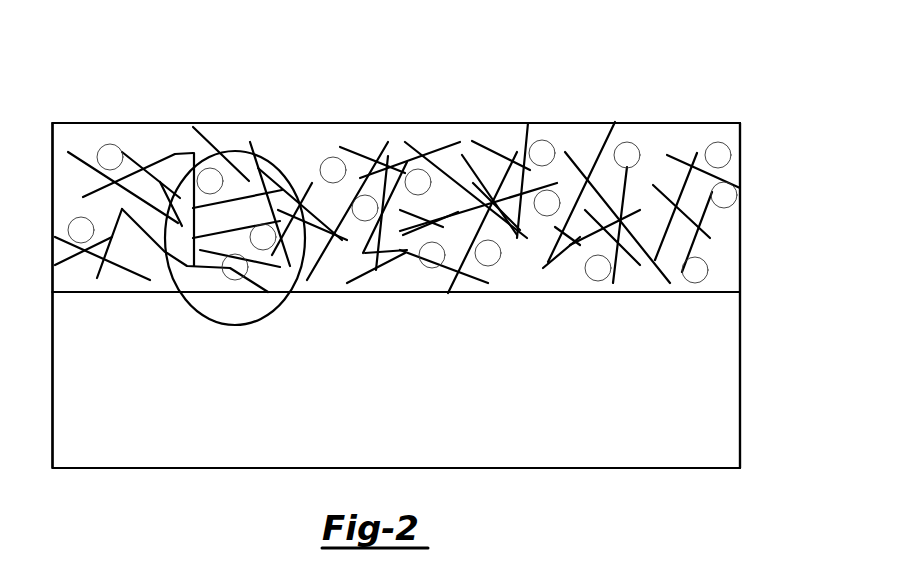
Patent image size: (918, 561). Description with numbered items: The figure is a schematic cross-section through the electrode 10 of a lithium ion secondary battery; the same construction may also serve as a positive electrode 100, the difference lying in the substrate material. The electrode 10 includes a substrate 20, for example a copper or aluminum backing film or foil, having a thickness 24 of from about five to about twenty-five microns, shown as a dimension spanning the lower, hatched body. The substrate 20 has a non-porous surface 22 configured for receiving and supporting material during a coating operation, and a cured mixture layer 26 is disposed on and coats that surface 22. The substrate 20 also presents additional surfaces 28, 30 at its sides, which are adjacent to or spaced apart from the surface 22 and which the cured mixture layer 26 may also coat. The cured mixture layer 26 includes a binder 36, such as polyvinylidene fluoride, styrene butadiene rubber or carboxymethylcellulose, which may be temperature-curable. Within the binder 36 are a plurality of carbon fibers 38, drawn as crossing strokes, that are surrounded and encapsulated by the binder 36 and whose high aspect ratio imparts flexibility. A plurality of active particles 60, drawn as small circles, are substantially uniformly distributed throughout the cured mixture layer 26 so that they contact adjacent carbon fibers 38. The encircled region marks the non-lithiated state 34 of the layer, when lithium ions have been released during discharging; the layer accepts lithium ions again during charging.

The electrode 10 is at (680, 62).
The positive electrode 100 is at (408, 246).
The substrate 20 is at (742, 383).
The surface 22 is at (473, 292).
The thickness 24 is at (45, 292).
The cured mixture layer 26 is at (475, 123).
The additional surface 28 is at (741, 353).
The additional surface 30 is at (52, 356).
The non-lithiated state 34 is at (235, 152).
The binder 36 is at (305, 151).
The carbon fibers 38 is at (606, 141).
The active particles 60 is at (111, 144).